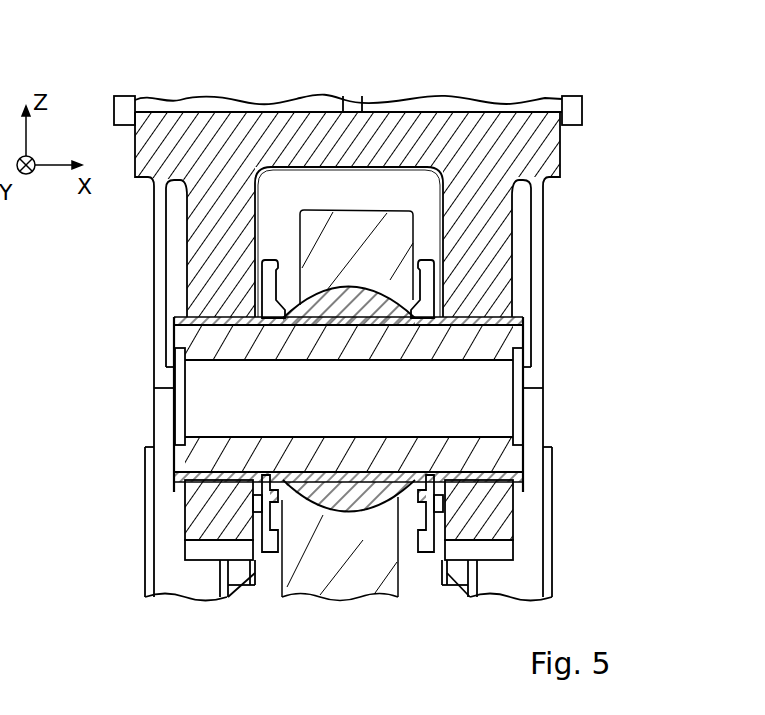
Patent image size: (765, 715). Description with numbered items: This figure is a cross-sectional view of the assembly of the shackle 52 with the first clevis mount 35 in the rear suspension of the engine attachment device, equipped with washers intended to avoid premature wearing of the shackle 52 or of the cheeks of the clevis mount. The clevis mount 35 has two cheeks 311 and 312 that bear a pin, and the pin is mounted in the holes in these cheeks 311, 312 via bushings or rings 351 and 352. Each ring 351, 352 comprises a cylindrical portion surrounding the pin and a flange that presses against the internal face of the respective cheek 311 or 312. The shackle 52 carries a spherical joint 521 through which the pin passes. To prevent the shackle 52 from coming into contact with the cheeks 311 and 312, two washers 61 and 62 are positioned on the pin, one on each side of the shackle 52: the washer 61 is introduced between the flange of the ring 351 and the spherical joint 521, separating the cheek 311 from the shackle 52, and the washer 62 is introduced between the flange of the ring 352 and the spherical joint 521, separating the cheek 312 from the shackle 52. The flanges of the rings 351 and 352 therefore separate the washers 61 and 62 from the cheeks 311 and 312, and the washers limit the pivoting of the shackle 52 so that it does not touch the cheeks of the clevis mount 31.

The clevis mount 31 is at (480, 287).
The cheek 311 is at (200, 515).
The cheek 312 is at (487, 522).
The first clevis mount 35 is at (477, 347).
The ring 351 is at (188, 320).
The ring 352 is at (495, 475).
The shackle 52 is at (363, 580).
The spherical joint 521 is at (312, 297).
The washer 61 is at (272, 553).
The washer 62 is at (433, 267).